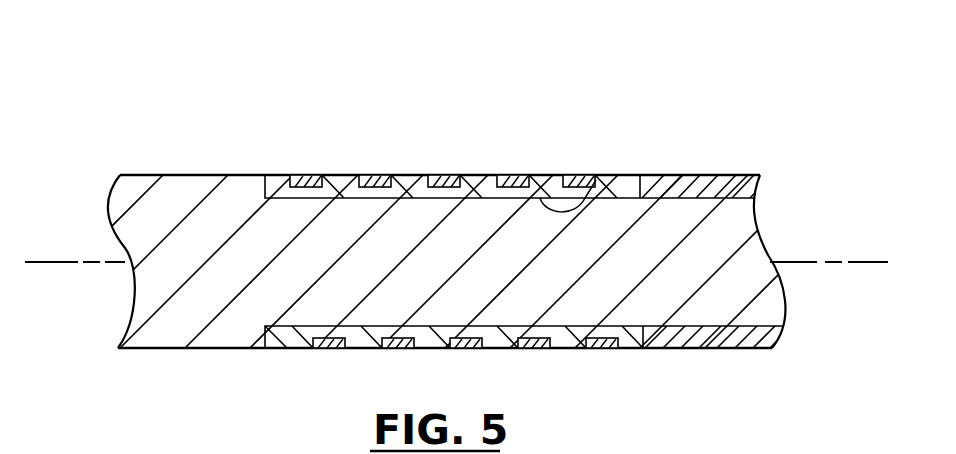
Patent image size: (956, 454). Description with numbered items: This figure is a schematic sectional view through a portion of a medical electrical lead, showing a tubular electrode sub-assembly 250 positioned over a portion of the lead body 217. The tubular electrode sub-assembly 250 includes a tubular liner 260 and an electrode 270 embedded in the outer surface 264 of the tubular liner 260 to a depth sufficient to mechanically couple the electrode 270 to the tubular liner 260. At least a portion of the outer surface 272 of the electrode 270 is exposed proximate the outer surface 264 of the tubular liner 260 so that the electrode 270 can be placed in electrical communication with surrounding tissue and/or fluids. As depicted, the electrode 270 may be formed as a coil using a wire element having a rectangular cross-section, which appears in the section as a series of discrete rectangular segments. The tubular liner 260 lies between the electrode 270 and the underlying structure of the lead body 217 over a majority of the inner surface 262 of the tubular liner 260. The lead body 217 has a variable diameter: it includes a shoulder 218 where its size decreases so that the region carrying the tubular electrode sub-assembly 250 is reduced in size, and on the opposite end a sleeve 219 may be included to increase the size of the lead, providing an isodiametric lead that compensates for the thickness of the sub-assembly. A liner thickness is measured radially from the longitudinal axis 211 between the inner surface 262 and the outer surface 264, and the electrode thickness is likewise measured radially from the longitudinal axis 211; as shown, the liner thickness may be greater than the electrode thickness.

The tubular electrode sub-assembly 250 is at (471, 190).
The lead body 217 is at (165, 217).
The shoulder 218 is at (272, 186).
The sleeve 219 is at (690, 180).
The electrode 270 is at (301, 181).
The tubular liner 260 is at (341, 186).
The outer surface of the tubular liner 264 is at (412, 181).
The outer surface of the electrode 272 is at (503, 180).
The inner surface of the tubular liner 262 is at (594, 180).
The longitudinal axis 211 is at (800, 262).